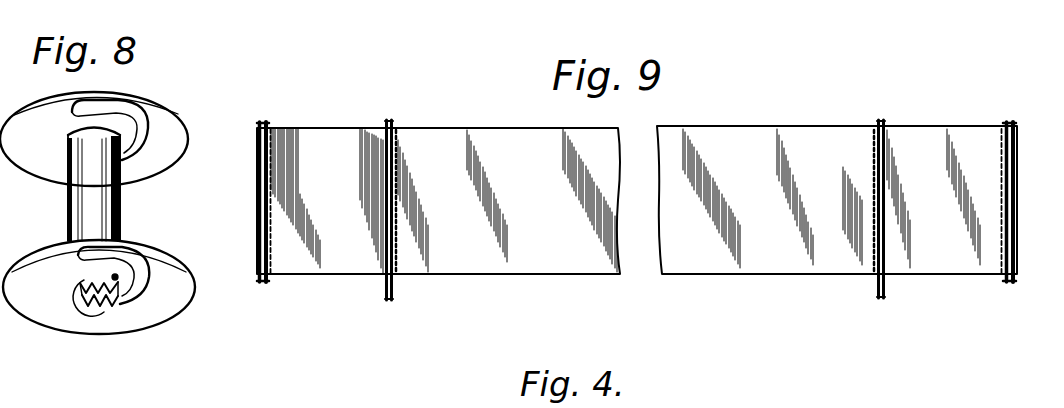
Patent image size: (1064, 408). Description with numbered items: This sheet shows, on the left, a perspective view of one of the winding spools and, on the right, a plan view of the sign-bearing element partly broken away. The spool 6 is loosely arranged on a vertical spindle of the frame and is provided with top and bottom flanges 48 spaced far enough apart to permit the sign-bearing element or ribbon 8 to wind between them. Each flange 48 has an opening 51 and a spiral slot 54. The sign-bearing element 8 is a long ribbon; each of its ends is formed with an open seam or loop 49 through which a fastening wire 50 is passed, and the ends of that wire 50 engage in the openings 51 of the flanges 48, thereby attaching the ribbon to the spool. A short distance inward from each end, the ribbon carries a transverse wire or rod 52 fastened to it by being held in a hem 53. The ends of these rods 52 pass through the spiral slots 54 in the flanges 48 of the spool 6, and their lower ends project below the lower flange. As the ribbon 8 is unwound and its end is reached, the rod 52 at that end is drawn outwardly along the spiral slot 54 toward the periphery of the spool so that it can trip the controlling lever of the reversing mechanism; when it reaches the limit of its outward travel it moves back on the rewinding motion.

In FIG. 8, the spool 6 is at (97, 203).
In FIG. 9, the sign-bearing element 8 is at (545, 268).
In FIG. 8, the flanges 48 is at (43, 93).
In FIG. 9, the open seam or loop 49 is at (258, 191).
In FIG. 9, the fastening wires 50 is at (266, 123).
In FIG. 8, the openings 51 is at (118, 128).
In FIG. 9, the transverse wires or rods 52 is at (390, 119).
In FIG. 9, the hems 53 is at (400, 136).
In FIG. 8, the spiral slots 54 is at (140, 125).